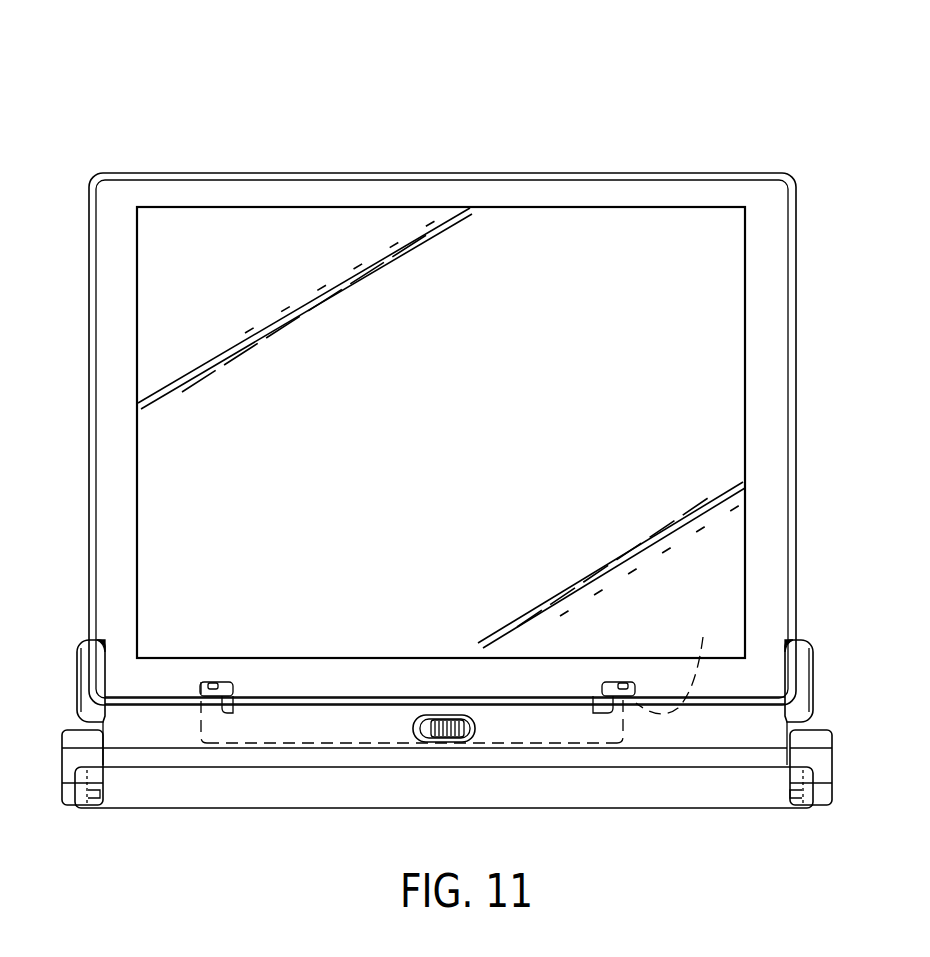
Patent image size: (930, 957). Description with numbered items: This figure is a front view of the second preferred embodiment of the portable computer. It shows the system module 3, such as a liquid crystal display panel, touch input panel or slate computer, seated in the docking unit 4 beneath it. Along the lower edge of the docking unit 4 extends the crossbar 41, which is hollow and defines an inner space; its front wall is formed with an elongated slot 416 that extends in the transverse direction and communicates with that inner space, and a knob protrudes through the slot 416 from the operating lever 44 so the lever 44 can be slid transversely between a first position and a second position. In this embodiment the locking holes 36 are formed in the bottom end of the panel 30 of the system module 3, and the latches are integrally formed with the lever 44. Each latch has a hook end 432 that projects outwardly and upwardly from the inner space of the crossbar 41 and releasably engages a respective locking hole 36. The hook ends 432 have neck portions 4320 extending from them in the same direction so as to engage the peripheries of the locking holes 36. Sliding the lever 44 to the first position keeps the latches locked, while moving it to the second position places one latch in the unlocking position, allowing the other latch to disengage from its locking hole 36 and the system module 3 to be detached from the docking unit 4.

The system module 3 is at (234, 168).
The panel 30 is at (776, 455).
The docking unit 4 is at (69, 649).
The crossbar 41 is at (677, 735).
The operating lever 44 is at (365, 738).
The neck portion 4320 is at (228, 826).
The hook end 432 is at (208, 681).
The locking hole 36 is at (240, 688).
The elongated slot 416 is at (437, 715).